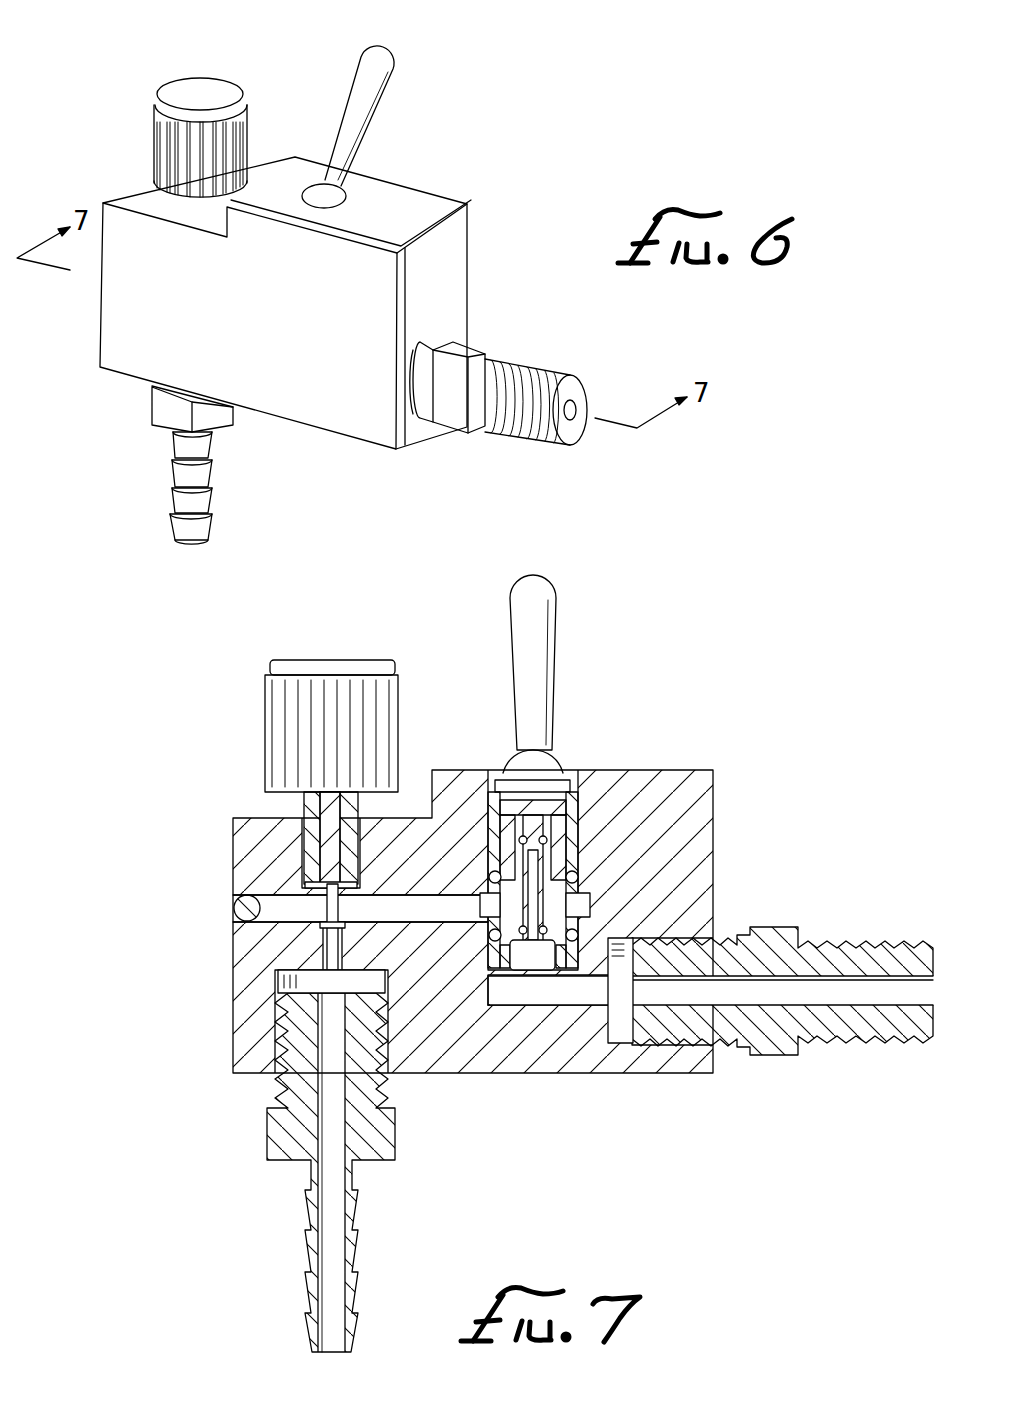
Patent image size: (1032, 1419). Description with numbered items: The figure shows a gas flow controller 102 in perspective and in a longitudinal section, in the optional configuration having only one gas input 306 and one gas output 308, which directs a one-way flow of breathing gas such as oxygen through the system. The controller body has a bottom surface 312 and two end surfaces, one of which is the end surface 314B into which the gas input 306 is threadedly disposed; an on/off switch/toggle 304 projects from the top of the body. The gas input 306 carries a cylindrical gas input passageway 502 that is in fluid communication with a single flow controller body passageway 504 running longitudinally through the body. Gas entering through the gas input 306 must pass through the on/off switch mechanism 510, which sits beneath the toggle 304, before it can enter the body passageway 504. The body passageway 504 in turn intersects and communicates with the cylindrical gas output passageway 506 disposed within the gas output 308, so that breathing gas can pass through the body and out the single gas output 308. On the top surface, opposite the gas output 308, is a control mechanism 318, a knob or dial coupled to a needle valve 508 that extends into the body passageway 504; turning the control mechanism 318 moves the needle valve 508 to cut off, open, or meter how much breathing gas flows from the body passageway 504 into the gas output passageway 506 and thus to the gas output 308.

In FIG. 6, the gas flow controller 102 is at (352, 303).
In FIG. 6, the on/off switch/toggle 304 is at (358, 118).
In FIG. 7, the on/off switch/toggle 304 is at (533, 645).
In FIG. 6, the gas input 306 is at (533, 377).
In FIG. 7, the gas input 306 is at (711, 989).
In FIG. 6, the gas output 308 is at (191, 530).
In FIG. 7, the gas output 308 is at (331, 1161).
In FIG. 6, the bottom surface 312 is at (310, 432).
In FIG. 7, the bottom surface 312 is at (508, 1083).
In FIG. 6, the end surface 314B is at (442, 283).
In FIG. 7, the end surface 314B is at (545, 964).
In FIG. 7, the control mechanism 318 is at (315, 667).
In FIG. 7, the gas input passageway 502 is at (883, 987).
In FIG. 7, the flow controller body passageway 504 is at (288, 907).
In FIG. 7, the gas output passageway 506 is at (333, 1242).
In FIG. 7, the needle valve 508 is at (308, 852).
In FIG. 7, the on/off switch mechanism 510 is at (590, 857).